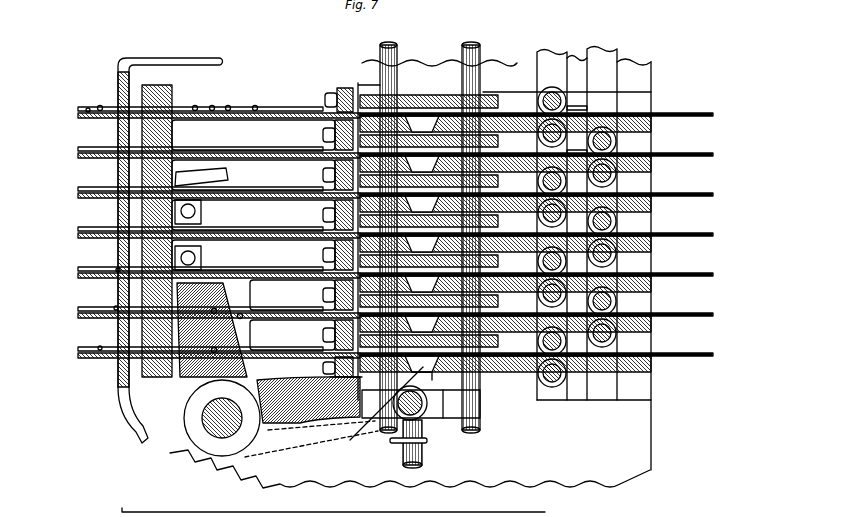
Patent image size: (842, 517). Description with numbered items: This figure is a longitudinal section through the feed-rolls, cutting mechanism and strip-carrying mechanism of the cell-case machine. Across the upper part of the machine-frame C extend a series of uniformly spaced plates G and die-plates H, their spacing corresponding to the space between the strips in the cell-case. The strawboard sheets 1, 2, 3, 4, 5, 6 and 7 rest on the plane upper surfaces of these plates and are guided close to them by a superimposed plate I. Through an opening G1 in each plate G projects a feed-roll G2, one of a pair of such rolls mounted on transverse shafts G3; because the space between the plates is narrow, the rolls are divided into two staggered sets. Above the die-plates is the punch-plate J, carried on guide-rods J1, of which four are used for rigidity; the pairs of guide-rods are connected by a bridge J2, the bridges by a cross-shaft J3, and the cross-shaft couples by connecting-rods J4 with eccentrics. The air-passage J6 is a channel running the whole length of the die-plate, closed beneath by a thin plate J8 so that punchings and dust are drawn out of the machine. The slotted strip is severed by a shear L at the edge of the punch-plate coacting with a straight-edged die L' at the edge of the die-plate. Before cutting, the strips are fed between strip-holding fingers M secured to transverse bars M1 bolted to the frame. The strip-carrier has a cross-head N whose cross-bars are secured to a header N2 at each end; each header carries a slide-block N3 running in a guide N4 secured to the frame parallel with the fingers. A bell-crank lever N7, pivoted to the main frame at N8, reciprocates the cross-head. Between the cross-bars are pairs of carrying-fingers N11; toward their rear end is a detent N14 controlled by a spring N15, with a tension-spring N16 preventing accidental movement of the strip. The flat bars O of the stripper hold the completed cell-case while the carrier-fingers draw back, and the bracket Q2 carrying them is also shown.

The strawboard sheet 1 is at (403, 114).
The strawboard sheet 2 is at (403, 154).
The strawboard sheet 3 is at (403, 194).
The strawboard sheet 4 is at (403, 234).
The strawboard sheet 5 is at (403, 274).
The strawboard sheet 6 is at (403, 314).
The strawboard sheet 7 is at (403, 354).
The machine-frame C is at (657, 266).
The plate G is at (498, 141).
The opening G1 is at (498, 181).
The feed-roll G2 is at (553, 93).
The transverse shaft G3 is at (600, 130).
The die-plate H is at (492, 118).
The superimposed plate I is at (577, 124).
The punch-plate J is at (425, 95).
The guide-rod J1 is at (437, 237).
The bridge J2 is at (428, 404).
The cross-shaft J3 is at (395, 421).
The connecting-rod J4 is at (415, 444).
The air-passage J6 is at (421, 362).
The thin plate J8 is at (374, 413).
The shear L is at (253, 135).
The straight-edged die L' is at (253, 175).
The strip-holding finger M is at (284, 105).
The transverse bar M1 is at (342, 88).
The cross-head N is at (165, 229).
The header N2 is at (242, 314).
The slide-block N3 is at (216, 310).
The guide N4 is at (240, 231).
The bell-crank lever N7 is at (187, 380).
The pivot N8 is at (212, 421).
The carrying-finger N11 is at (86, 110).
The detent N14 is at (117, 269).
The spring N15 is at (115, 307).
The tension-spring N16 is at (99, 347).
The flat bar O is at (118, 88).
The pipe Q2 is at (170, 213).